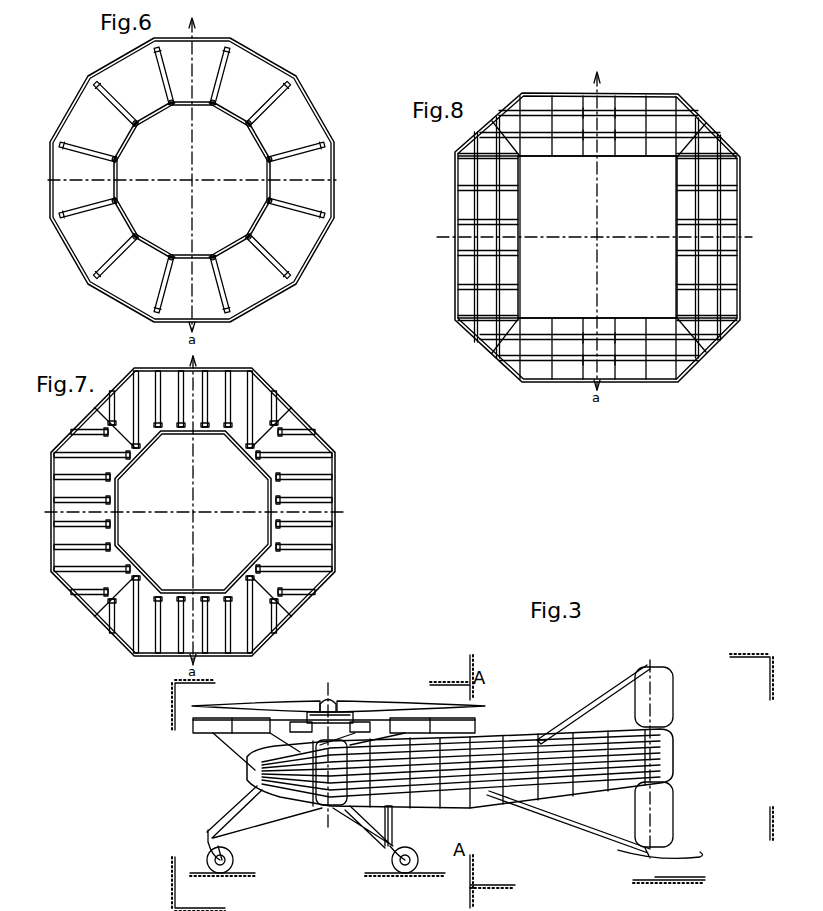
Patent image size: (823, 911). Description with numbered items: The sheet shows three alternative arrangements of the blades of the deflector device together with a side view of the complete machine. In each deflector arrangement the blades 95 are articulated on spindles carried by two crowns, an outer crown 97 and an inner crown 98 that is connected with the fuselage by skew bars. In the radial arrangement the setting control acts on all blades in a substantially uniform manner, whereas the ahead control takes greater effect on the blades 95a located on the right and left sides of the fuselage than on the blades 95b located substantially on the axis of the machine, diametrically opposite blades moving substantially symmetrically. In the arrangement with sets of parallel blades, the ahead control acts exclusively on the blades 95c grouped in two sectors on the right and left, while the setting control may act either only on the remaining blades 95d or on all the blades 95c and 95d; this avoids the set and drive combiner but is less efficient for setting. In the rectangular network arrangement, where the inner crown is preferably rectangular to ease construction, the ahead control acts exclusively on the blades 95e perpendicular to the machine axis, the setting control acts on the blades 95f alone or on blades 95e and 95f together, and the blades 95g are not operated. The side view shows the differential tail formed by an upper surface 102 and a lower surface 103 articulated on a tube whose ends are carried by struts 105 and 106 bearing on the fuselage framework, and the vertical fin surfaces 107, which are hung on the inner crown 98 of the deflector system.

In FIG. 6, the outer crown 97 is at (74, 104).
In FIG. 7, the outer crown 97 is at (78, 430).
In FIG. 8, the outer crown 97 is at (455, 205).
In FIG. 6, the inner crown 98 is at (127, 145).
In FIG. 7, the inner crown 98 is at (127, 468).
In FIG. 8, the inner crown 98 is at (519, 212).
In FIG. 7, the blades 95 is at (78, 543).
In FIG. 6, the blades located on the right and left sides of the fuselage 95a is at (63, 209).
In FIG. 7, the blades located on the right and left sides of the fuselage 95a is at (202, 632).
In FIG. 6, the blades located substantially on the axis of the machine 95b is at (218, 62).
In FIG. 7, the blades grouped in two sectors on the right and left 95c is at (310, 545).
In FIG. 7, the remaining blades 95d is at (200, 393).
In FIG. 8, the blades perpendicular to the axis of the machine 95e is at (540, 130).
In FIG. 8, the blades operated by the setting control 95f is at (618, 103).
In FIG. 8, the non-operated blades 95g is at (492, 278).
In FIG. 3, the upper surface 102 is at (660, 703).
In FIG. 3, the lower surface 103 is at (665, 805).
In FIG. 3, the strut 105 is at (592, 700).
In FIG. 3, the strut 106 is at (588, 832).
In FIG. 3, the vertical fin surfaces 107 is at (326, 810).